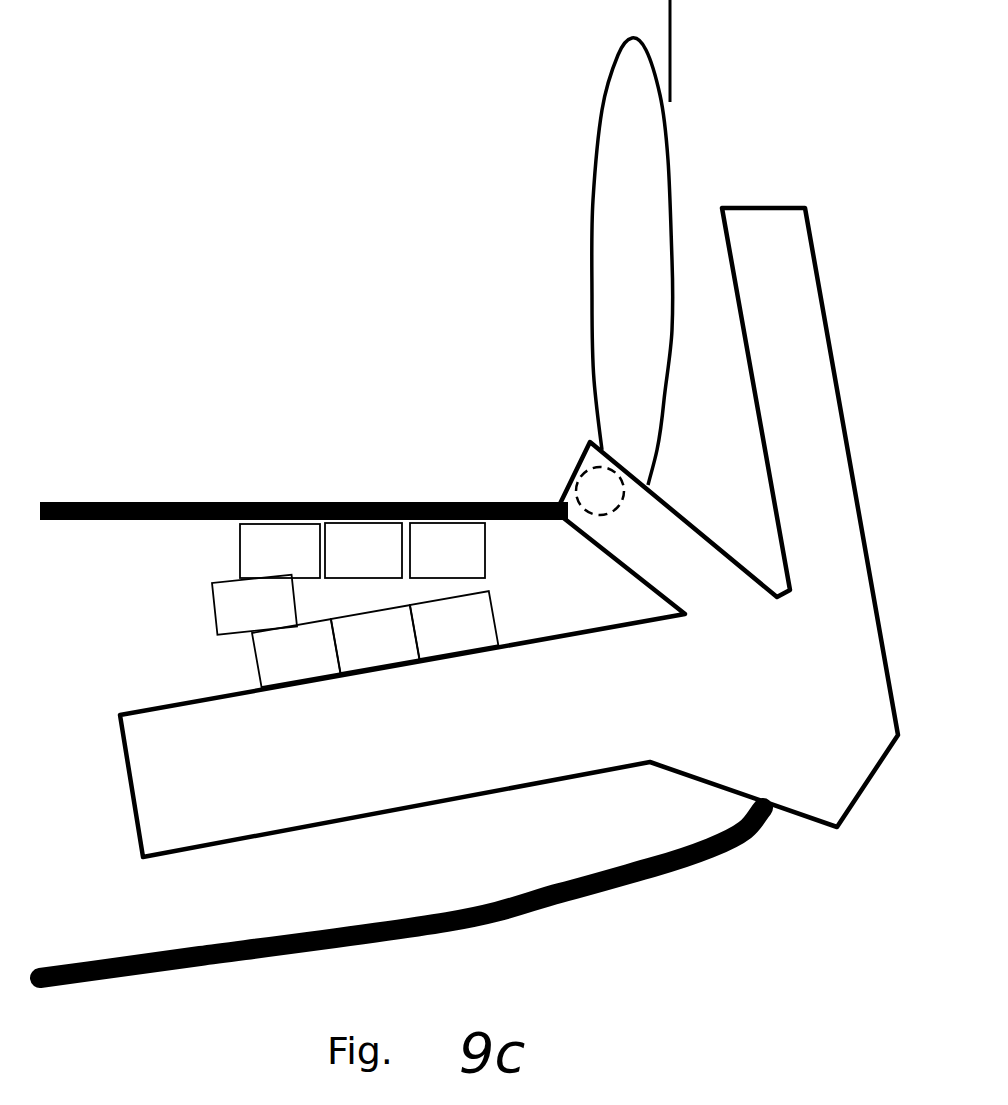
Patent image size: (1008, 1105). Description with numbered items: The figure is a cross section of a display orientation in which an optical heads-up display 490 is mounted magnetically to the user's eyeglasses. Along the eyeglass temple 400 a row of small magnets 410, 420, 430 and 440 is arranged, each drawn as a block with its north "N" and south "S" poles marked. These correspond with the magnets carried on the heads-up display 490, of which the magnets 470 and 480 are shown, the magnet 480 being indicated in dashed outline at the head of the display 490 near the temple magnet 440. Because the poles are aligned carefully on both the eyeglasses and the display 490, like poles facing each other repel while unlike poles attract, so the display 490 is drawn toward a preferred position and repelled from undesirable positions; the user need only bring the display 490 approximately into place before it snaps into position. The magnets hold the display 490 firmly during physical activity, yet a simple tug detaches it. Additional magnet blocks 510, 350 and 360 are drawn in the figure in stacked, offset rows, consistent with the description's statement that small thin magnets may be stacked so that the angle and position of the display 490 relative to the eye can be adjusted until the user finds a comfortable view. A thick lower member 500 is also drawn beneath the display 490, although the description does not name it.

The temple 400 is at (108, 500).
The magnet 410 is at (262, 552).
The magnet 420 is at (340, 553).
The magnet 430 is at (432, 547).
The magnet 440 is at (590, 487).
The magnet 480 is at (603, 498).
The heads-up display 490 is at (795, 705).
The lower guide rail 500 is at (158, 973).
The offset magnet 510 is at (233, 603).
The arm magnet 350 is at (317, 657).
The arm magnet 360 is at (400, 630).
The magnet 470 is at (472, 627).